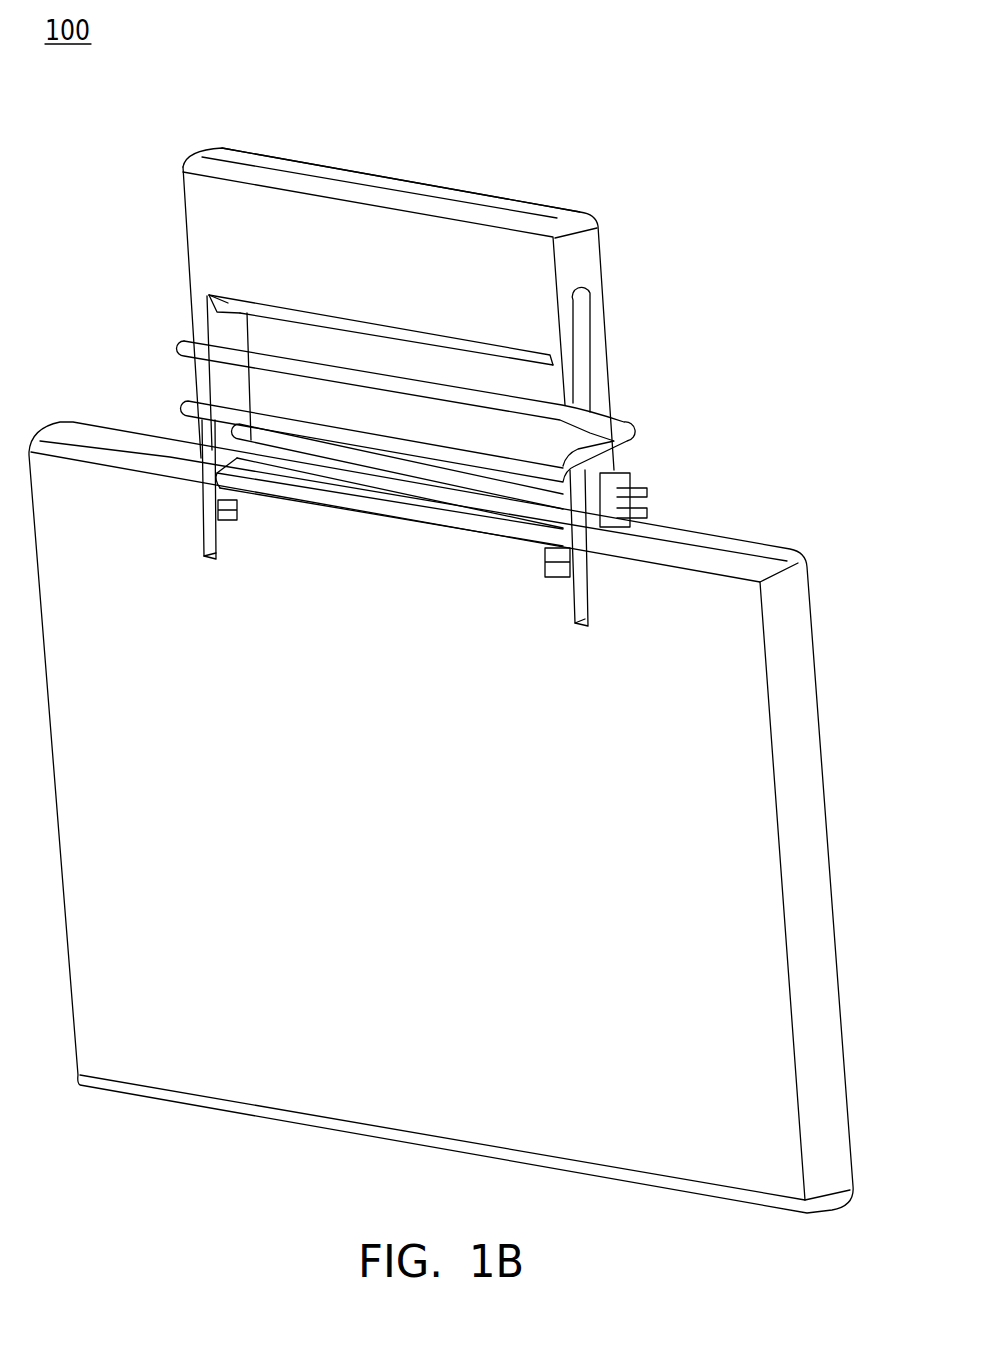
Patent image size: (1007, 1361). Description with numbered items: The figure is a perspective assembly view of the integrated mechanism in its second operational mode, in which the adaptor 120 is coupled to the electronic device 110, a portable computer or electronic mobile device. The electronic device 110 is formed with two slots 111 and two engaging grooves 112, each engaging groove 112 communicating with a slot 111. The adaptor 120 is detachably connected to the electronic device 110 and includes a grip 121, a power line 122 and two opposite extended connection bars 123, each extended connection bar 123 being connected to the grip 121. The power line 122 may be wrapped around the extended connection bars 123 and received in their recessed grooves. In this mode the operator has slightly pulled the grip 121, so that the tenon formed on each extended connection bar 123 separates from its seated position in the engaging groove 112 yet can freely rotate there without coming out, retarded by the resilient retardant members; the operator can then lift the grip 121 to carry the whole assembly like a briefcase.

The electronic device 110 is at (158, 1098).
The slot 111 is at (207, 525).
The engaging groove 112 is at (207, 523).
The adaptor 120 is at (603, 234).
The grip 121 is at (380, 180).
The power line 122 is at (520, 408).
The extended connection bar 123 is at (223, 383).